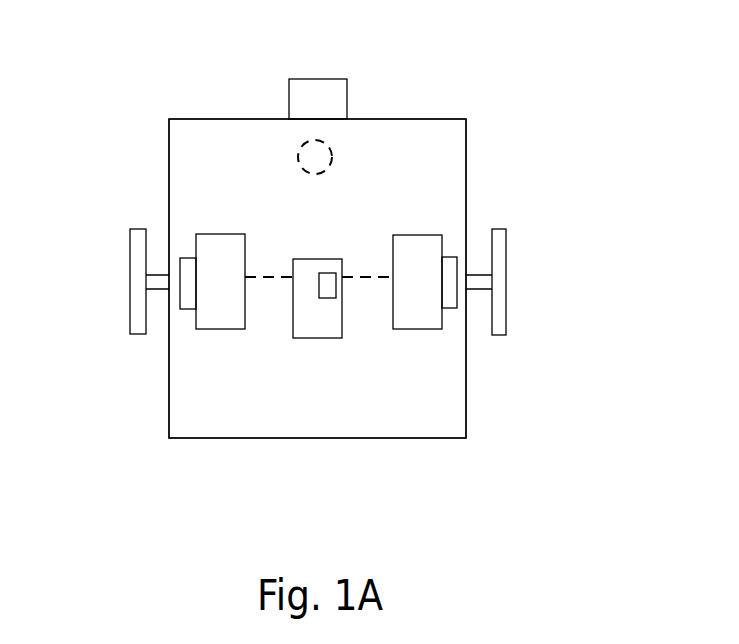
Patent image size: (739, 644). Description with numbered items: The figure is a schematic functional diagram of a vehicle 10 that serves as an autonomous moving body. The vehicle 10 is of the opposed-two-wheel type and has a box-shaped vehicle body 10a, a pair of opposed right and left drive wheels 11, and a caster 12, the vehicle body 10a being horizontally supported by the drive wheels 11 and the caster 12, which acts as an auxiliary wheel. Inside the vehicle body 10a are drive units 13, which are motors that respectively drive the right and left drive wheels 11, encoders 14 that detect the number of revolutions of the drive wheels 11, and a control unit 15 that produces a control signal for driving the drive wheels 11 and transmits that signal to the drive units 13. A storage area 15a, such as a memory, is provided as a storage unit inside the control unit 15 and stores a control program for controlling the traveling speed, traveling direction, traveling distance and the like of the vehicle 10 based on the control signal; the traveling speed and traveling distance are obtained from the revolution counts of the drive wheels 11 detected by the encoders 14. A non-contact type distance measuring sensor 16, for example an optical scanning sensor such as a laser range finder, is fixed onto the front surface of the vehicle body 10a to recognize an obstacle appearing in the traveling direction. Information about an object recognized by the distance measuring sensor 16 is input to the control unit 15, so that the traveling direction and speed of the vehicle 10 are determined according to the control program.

The vehicle 10 is at (522, 78).
The vehicle body 10a is at (417, 438).
The drive wheel 11 is at (130, 263).
The caster 12 is at (333, 160).
The drive unit 13 is at (205, 330).
The encoder 14 is at (188, 257).
The control unit 15 is at (307, 338).
The storage area 15a is at (328, 298).
The distance measuring sensor 16 is at (288, 87).